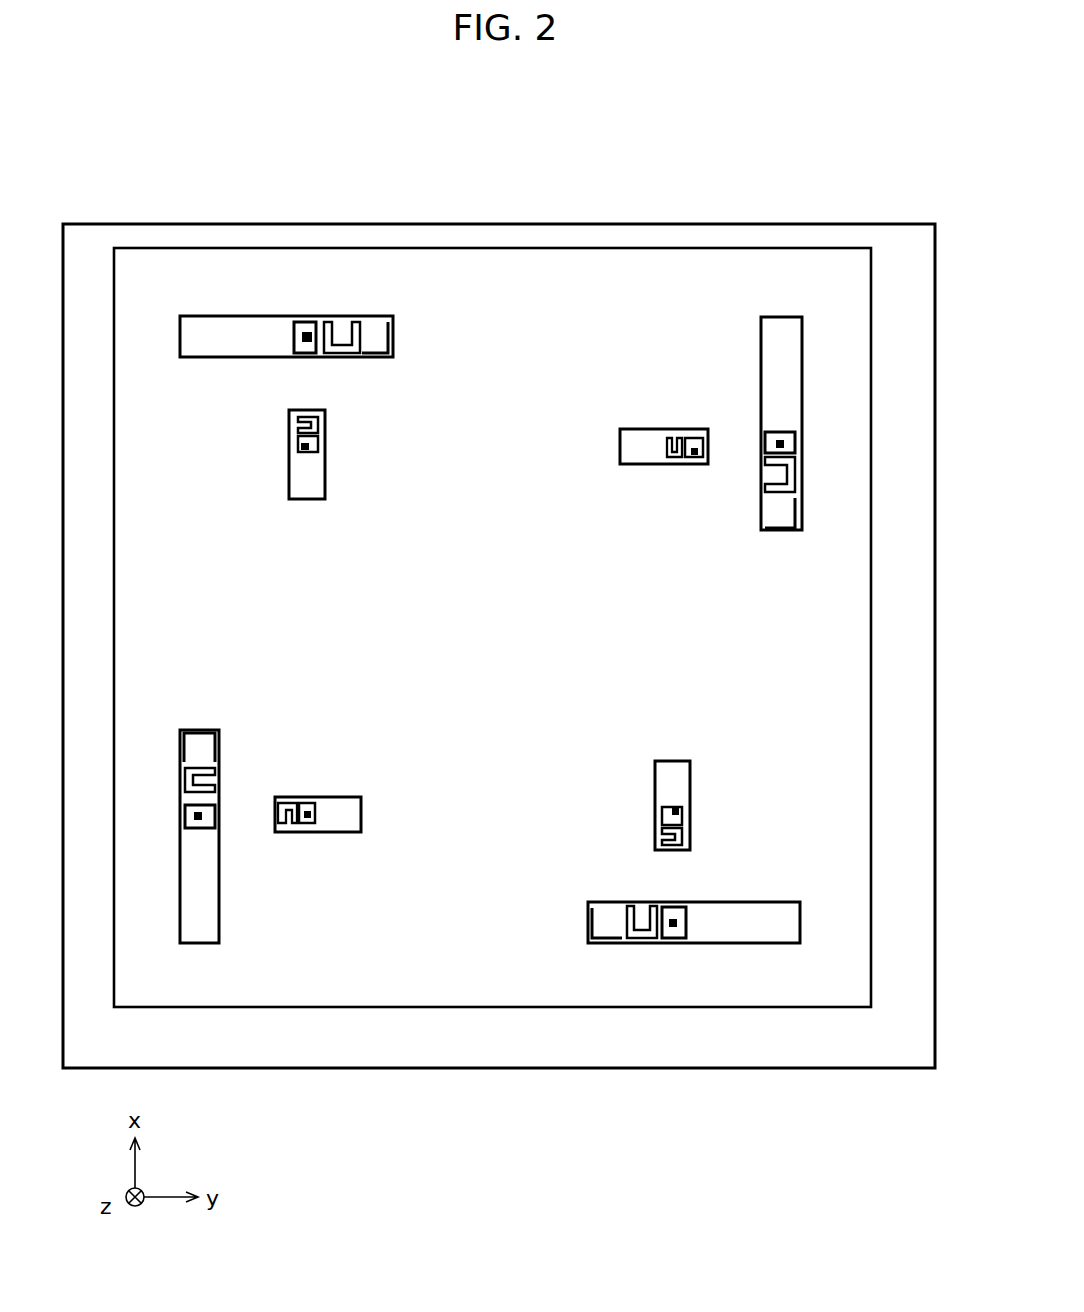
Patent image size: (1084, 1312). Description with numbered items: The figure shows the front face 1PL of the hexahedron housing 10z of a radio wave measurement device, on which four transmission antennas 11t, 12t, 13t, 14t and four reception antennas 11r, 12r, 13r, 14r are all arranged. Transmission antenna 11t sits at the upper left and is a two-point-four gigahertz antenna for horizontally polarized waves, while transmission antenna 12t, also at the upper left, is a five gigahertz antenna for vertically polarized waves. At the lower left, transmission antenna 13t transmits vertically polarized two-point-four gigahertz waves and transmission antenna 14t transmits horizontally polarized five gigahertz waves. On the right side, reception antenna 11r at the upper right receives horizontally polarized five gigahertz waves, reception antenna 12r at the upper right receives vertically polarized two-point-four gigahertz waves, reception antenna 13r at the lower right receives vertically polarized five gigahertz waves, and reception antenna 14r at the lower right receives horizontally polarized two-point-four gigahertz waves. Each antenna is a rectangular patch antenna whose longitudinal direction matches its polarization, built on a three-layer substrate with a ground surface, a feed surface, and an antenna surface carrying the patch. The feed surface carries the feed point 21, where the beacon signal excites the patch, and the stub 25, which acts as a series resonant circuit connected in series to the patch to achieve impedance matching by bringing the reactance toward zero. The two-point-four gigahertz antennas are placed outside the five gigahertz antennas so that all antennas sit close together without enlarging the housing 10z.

The front face 1PL is at (350, 262).
The housing 10z is at (659, 223).
The transmission antenna 11t is at (213, 316).
The transmission antenna 12t is at (289, 468).
The transmission antenna 13t is at (200, 730).
The transmission antenna 14t is at (318, 797).
The reception antenna 11r is at (669, 429).
The reception antenna 12r is at (803, 365).
The reception antenna 13r is at (668, 761).
The reception antenna 14r is at (742, 902).
The feed point 21 is at (313, 343).
The stub 25 is at (370, 330).